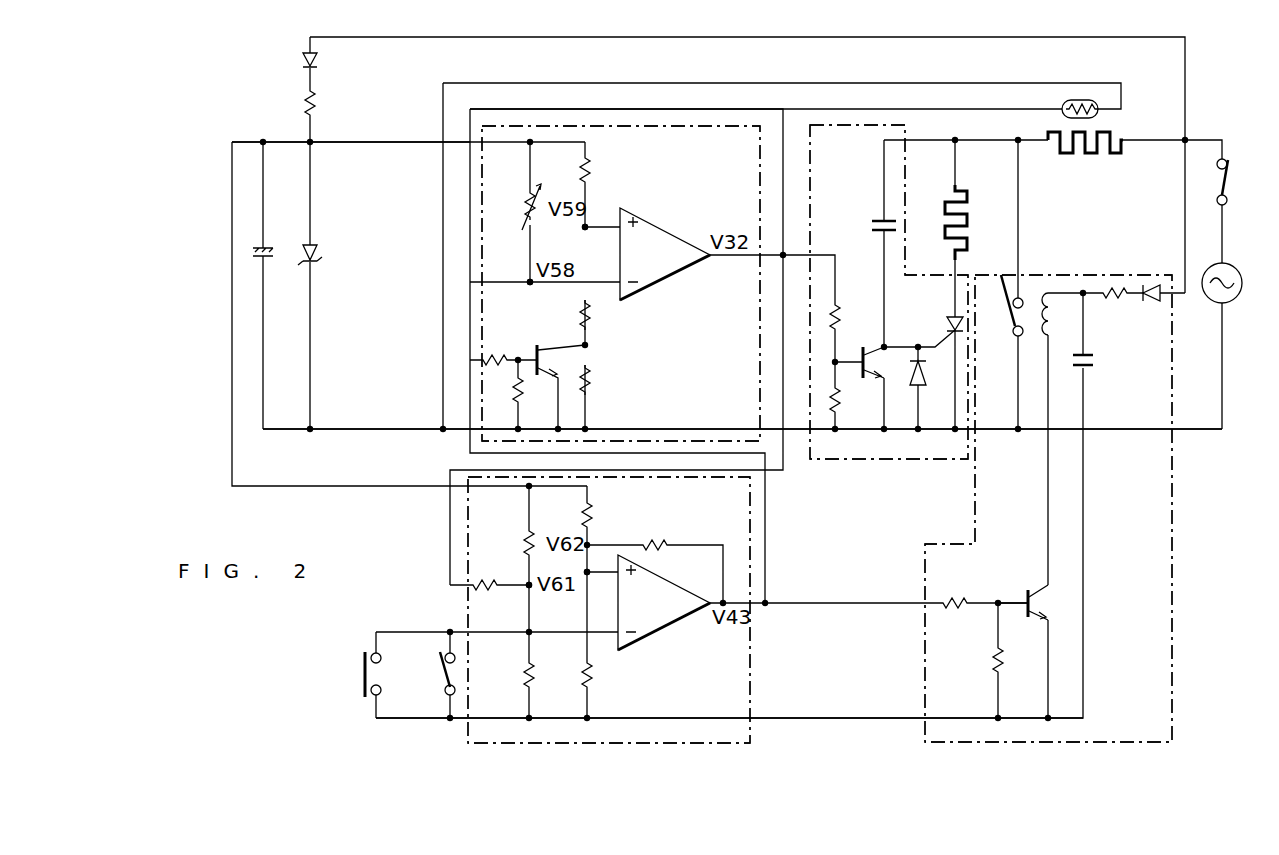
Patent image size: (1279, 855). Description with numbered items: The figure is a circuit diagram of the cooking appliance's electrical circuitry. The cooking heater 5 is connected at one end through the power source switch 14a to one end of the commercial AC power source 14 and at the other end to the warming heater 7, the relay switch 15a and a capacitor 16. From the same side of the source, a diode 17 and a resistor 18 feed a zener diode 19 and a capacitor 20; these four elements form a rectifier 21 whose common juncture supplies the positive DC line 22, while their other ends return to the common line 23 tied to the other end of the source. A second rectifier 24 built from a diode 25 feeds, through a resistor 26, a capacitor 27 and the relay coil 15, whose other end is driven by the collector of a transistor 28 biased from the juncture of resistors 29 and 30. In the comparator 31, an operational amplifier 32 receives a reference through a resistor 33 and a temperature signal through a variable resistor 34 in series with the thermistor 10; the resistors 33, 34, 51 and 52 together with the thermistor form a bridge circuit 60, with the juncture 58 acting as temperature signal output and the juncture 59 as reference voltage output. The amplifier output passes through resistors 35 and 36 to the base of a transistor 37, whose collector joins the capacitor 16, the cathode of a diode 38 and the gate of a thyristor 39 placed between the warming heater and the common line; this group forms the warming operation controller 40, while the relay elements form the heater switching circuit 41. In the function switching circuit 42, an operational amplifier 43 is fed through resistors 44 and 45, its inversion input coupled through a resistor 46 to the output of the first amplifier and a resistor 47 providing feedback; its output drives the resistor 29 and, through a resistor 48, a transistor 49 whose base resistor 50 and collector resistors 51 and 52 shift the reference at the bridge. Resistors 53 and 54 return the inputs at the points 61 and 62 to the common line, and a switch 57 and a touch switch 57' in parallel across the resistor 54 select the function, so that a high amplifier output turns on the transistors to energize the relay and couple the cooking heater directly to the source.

The cooking heater 5 is at (1094, 158).
The warming heater 7 is at (970, 210).
The thermistor 10 is at (1062, 108).
The AC power source 14 is at (1242, 285).
The power source switch 14a is at (1230, 180).
The relay coil 15 is at (1054, 316).
The relay switch 15a is at (1000, 280).
The capacitor 16 is at (872, 228).
The diode 17 is at (318, 60).
The resistor 18 is at (316, 100).
The zener diode 19 is at (318, 255).
The capacitor 20 is at (268, 262).
The rectifier 21 is at (343, 166).
The positive DC line 22 is at (368, 142).
The common line 23 is at (1104, 432).
The rectifier 24 is at (1092, 318).
The diode 25 is at (1150, 302).
The resistor 26 is at (1118, 302).
The capacitor 27 is at (1095, 362).
The transistor 28 is at (1040, 606).
The resistor 29 is at (952, 598).
The resistor 30 is at (988, 662).
The comparator 31 is at (762, 152).
The operational amplifier 32 is at (676, 230).
The resistor 33 is at (590, 168).
The variable resistor 34 is at (523, 211).
The resistor 35 is at (841, 316).
The resistor 36 is at (841, 398).
The transistor 37 is at (875, 365).
The diode 38 is at (930, 372).
The thyristor 39 is at (946, 326).
The warming operation controller 40 is at (850, 462).
The heater switching circuit 41 is at (1174, 474).
The function switching circuit 42 is at (460, 620).
The operational amplifier 43 is at (670, 626).
The resistor 44 is at (592, 515).
The resistor 45 is at (520, 540).
The resistor 46 is at (488, 583).
The resistor 47 is at (656, 542).
The resistor 48 is at (498, 342).
The transistor 49 is at (545, 353).
The resistor 50 is at (512, 388).
The resistor 51 is at (590, 312).
The resistor 52 is at (590, 380).
The resistor 53 is at (592, 678).
The resistor 54 is at (522, 682).
The switch 57 is at (429, 674).
The touch switch 57' is at (346, 674).
The juncture 58 is at (528, 281).
The juncture 59 is at (587, 233).
The bridge circuit 60 is at (535, 302).
The point 61 is at (527, 590).
The point 62 is at (589, 577).